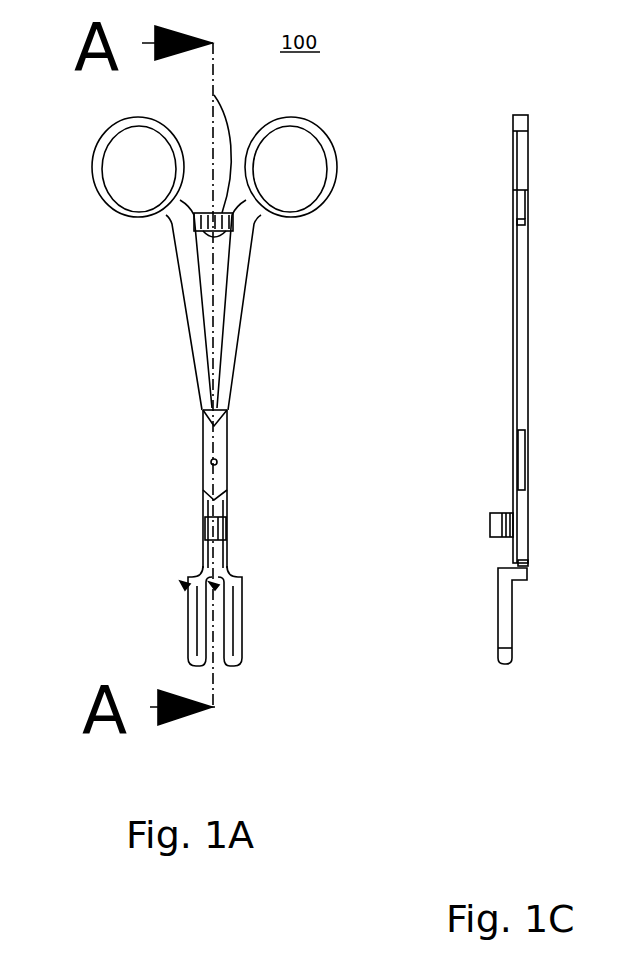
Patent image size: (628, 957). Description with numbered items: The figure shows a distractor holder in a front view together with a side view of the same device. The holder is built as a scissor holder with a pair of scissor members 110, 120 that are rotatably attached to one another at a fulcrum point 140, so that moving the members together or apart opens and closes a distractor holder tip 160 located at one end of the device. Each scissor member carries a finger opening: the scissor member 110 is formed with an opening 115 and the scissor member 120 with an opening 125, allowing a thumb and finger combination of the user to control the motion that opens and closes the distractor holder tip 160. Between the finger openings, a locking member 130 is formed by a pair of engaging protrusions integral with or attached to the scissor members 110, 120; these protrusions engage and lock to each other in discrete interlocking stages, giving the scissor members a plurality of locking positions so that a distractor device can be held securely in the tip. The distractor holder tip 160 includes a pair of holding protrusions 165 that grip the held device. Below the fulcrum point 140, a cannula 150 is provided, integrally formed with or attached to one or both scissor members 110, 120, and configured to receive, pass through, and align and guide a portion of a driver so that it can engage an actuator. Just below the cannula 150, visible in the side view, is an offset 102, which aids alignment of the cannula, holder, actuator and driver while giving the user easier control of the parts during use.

In FIG. 1C, the offset 102 is at (528, 567).
In FIG. 1A, the scissor member 110 is at (233, 293).
In FIG. 1A, the opening 115 is at (293, 153).
In FIG. 1A, the scissor member 120 is at (183, 250).
In FIG. 1C, the scissor member 120 is at (513, 252).
In FIG. 1A, the opening 125 is at (133, 145).
In FIG. 1A, the locking member 130 is at (213, 92).
In FIG. 1A, the fulcrum point 140 is at (218, 460).
In FIG. 1C, the fulcrum point 140 is at (521, 451).
In FIG. 1A, the cannula 150 is at (226, 533).
In FIG. 1C, the cannula 150 is at (496, 550).
In FIG. 1A, the distractor holder tip 160 is at (190, 632).
In FIG. 1C, the distractor holder tip 160 is at (503, 628).
In FIG. 1A, the holding protrusion 165 is at (213, 588).